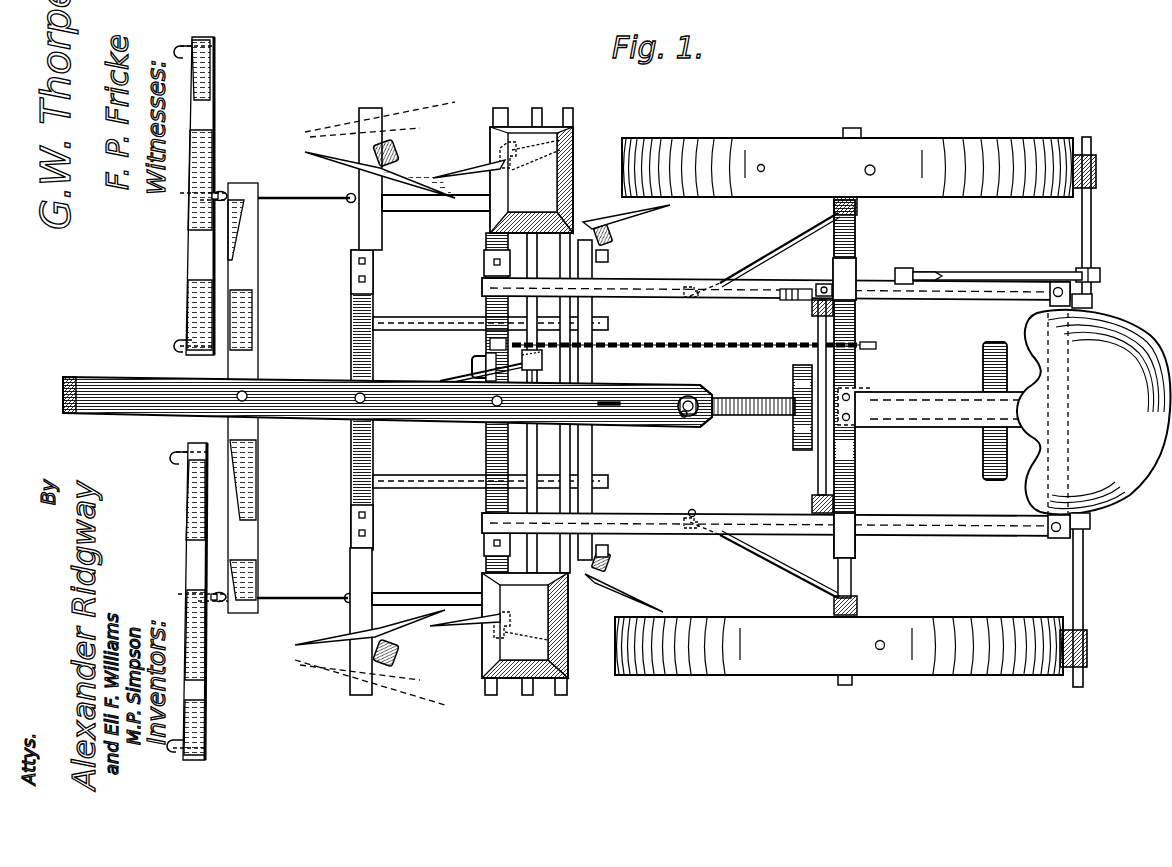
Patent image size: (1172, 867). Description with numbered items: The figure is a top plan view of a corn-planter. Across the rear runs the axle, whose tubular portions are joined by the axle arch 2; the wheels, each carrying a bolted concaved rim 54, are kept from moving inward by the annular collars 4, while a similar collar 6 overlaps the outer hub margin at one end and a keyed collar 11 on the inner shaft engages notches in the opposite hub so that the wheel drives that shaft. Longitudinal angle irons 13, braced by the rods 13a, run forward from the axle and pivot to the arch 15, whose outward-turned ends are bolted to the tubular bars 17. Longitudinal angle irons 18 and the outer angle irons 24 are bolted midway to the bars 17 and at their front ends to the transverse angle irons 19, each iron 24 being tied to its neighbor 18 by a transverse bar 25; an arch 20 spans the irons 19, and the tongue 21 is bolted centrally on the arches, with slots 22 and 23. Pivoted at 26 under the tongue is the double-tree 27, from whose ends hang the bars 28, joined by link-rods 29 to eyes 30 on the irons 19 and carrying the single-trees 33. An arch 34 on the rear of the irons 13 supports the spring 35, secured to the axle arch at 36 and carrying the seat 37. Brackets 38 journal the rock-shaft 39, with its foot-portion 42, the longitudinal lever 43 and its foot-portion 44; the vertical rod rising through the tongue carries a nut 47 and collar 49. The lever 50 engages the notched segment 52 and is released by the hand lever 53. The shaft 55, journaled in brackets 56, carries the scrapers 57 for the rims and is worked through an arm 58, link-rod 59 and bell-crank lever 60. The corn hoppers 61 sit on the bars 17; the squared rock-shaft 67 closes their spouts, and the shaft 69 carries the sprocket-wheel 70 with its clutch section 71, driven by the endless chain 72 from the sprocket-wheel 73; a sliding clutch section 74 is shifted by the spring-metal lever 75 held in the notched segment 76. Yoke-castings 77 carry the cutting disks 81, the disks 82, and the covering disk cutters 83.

The arch 2 is at (844, 399).
The annular collars 4 is at (858, 205).
The collar 6 is at (843, 685).
The collar 11 is at (851, 127).
The angle irons 13 is at (776, 407).
The rods 13a is at (762, 405).
The arch 15 is at (486, 447).
The tubular bars 17 is at (485, 715).
The angle irons 18 is at (490, 399).
The angle irons 19 is at (356, 566).
The arch 20 is at (349, 400).
The tongue 21 is at (387, 394).
The slot 22 is at (712, 413).
The slot 23 is at (630, 400).
The angle irons 24 is at (431, 400).
The transverse bar 25 is at (613, 403).
The pivot 26 is at (243, 513).
The double-tree 27 is at (243, 283).
The bars 28 is at (221, 191).
The link-rods 29 is at (303, 400).
The eyes 30 is at (349, 196).
The single-trees 33 is at (215, 88).
The arch 34 is at (1050, 305).
The spring 35 is at (990, 409).
The attachment point 36 is at (858, 425).
The seat 37 is at (1094, 412).
The brackets 38 is at (812, 313).
The rock-shaft 39 is at (818, 468).
The foot-portion 42 is at (792, 407).
The lever 43 is at (753, 397).
The foot-portion 44 is at (982, 411).
The nut 47 is at (688, 396).
The collar 49 is at (683, 418).
The lever 50 is at (844, 279).
The segment 52 is at (794, 300).
The hand lever 53 is at (822, 284).
The concaved rim 54 is at (844, 406).
The transverse shaft 55 is at (1090, 412).
The bearing brackets 56 is at (1092, 301).
The scrapers 57 is at (1090, 411).
The arm 58 is at (1095, 267).
The link-rod 59 is at (991, 267).
The bell-crank lever 60 is at (912, 271).
The corn hoppers 61 is at (527, 402).
The rock-shaft 67 is at (556, 715).
The shaft 69 is at (522, 715).
The sprocket-wheel 70 is at (490, 342).
The ratchet clutch section 71 is at (548, 360).
The endless chain 72 is at (690, 334).
The sprocket-wheel 73 is at (877, 351).
The clutch section 74 is at (582, 400).
The spring-metal lever 75 is at (485, 370).
The notched segment 76 is at (475, 363).
The yoke-castings 77 is at (503, 403).
The cutting disks 81 is at (375, 403).
The disks 82 is at (476, 172).
The disk cutters 83 is at (626, 408).